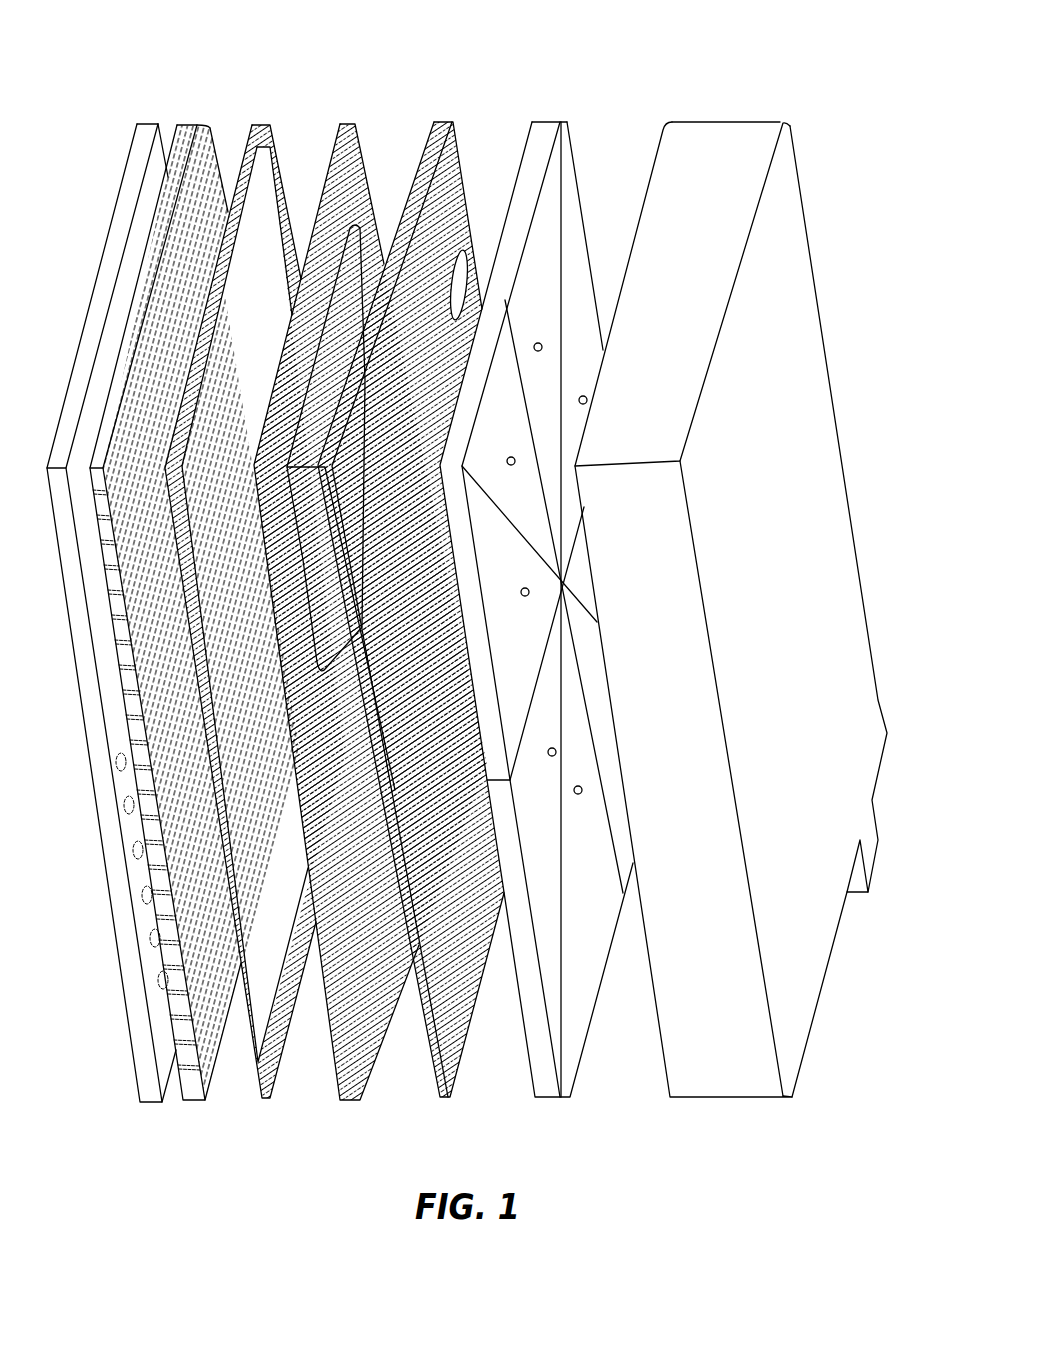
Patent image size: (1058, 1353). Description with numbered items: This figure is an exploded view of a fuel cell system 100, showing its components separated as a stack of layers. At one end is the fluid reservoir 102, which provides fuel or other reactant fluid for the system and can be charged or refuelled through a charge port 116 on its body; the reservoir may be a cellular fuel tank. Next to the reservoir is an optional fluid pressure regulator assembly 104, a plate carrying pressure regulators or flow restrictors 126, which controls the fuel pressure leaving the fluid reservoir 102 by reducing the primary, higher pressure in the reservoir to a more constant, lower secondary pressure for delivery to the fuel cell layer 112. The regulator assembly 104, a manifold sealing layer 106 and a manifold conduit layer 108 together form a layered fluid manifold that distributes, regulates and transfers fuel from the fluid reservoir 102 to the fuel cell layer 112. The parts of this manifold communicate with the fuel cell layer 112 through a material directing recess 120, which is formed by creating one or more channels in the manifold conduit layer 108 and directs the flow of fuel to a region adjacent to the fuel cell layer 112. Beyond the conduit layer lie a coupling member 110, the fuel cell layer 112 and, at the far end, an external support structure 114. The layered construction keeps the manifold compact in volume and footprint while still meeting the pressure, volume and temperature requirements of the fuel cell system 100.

The fuel cell system 100 is at (130, 48).
The fluid reservoir 102 is at (745, 609).
The fluid pressure regulator assembly 104 is at (575, 978).
The manifold sealing layer 106 is at (450, 998).
The manifold conduit layer 108 is at (529, 676).
The coupling member 110 is at (270, 1074).
The fuel cell layer 112 is at (207, 1074).
The external support structure 114 is at (120, 920).
The charge port 116 is at (870, 845).
The material directing recess 120 is at (375, 222).
The pressure regulators or flow restrictors 126 is at (542, 344).